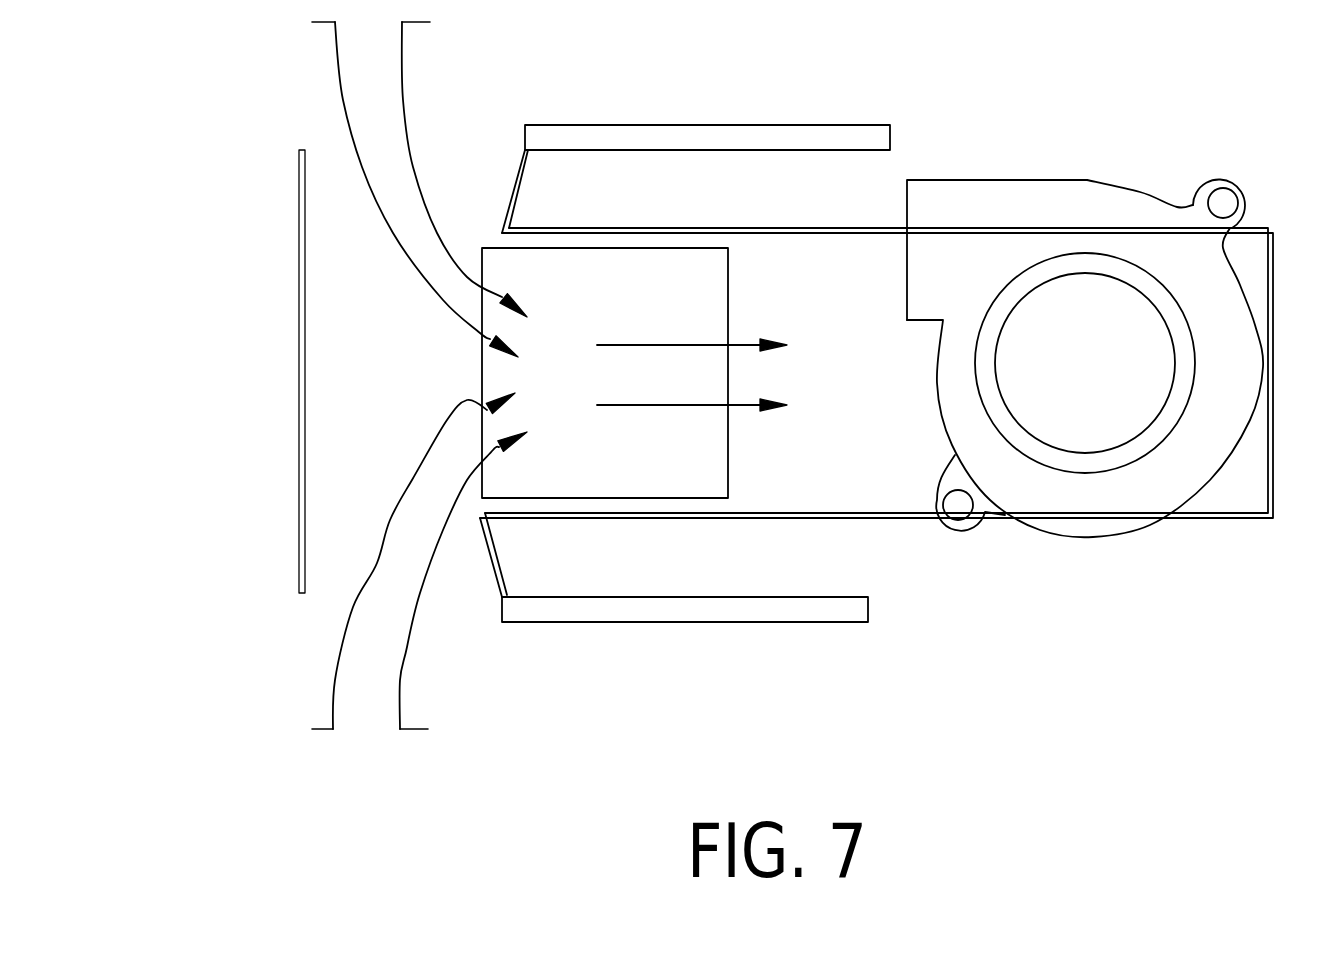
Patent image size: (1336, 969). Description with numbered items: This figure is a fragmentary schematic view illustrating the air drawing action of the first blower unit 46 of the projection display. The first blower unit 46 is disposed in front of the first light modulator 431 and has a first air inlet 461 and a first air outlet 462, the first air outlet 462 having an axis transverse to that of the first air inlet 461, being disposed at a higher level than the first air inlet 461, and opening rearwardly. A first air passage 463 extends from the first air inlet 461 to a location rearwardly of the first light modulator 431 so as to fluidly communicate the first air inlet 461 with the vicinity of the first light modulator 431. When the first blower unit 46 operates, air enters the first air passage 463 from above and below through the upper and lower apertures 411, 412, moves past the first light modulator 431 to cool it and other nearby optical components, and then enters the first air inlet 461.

The upper aperture 411 is at (447, 190).
The lower aperture 412 is at (350, 550).
The first light modulator 431 is at (742, 482).
The first blower unit 46 is at (1067, 369).
The first air inlet 461 is at (1103, 413).
The first air outlet 462 is at (907, 213).
The first air passage 463 is at (838, 498).